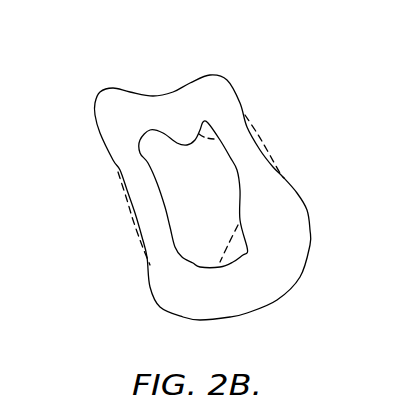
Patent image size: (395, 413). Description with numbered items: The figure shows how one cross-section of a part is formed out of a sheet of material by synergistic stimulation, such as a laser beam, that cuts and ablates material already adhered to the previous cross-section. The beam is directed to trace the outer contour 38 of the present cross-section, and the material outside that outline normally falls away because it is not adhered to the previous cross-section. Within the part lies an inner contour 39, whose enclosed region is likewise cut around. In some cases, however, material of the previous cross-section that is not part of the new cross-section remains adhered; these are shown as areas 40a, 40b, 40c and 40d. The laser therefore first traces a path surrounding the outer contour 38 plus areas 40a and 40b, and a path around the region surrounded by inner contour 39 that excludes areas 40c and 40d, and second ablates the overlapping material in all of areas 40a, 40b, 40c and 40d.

The outer contour 38 is at (222, 82).
The inner contour 39 is at (157, 158).
The area of overlapping material 40a is at (137, 198).
The area of overlapping material 40b is at (263, 150).
The area of overlapping material 40c is at (205, 131).
The area of overlapping material 40d is at (247, 253).